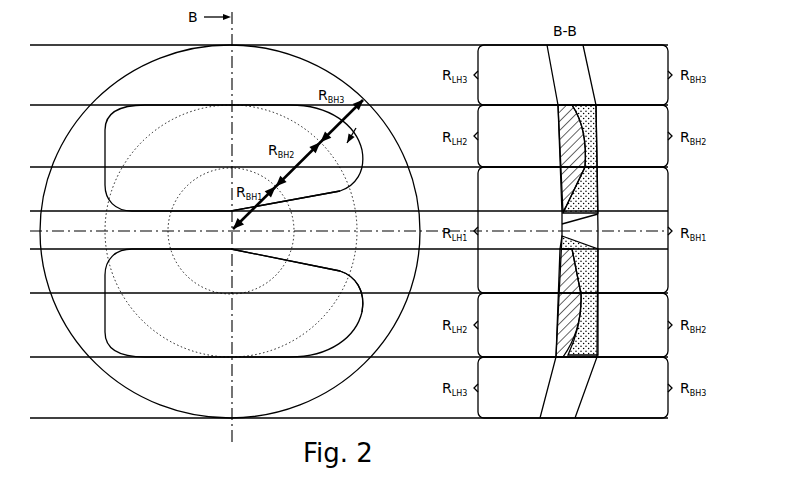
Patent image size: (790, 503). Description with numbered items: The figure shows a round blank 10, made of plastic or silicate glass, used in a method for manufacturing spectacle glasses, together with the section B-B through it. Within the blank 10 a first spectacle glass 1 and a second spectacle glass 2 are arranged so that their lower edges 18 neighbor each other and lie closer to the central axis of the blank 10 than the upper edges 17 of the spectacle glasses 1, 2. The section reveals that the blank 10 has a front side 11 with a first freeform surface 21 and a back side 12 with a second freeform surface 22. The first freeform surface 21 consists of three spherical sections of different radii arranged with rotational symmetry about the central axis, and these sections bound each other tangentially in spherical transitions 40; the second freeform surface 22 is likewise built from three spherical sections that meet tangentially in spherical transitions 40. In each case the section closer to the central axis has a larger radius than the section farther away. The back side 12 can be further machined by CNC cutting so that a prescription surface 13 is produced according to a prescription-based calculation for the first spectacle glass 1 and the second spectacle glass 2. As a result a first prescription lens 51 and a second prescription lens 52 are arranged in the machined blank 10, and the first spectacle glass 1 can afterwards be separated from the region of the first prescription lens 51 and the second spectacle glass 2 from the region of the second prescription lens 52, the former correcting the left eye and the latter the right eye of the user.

The first spectacle glass 1 is at (368, 104).
The second spectacle glass 2 is at (343, 308).
The round blank 10 is at (113, 362).
The front side 11 is at (613, 231).
The back side 12 is at (522, 231).
The prescription surface 13 is at (565, 173).
The upper edges 17 is at (251, 104).
The lower edges 18 is at (341, 191).
The first freeform surface 21 is at (586, 52).
The second freeform surface 22 is at (548, 52).
The spherical transitions 40 is at (297, 227).
The first prescription lens 51 is at (590, 200).
The second prescription lens 52 is at (590, 266).